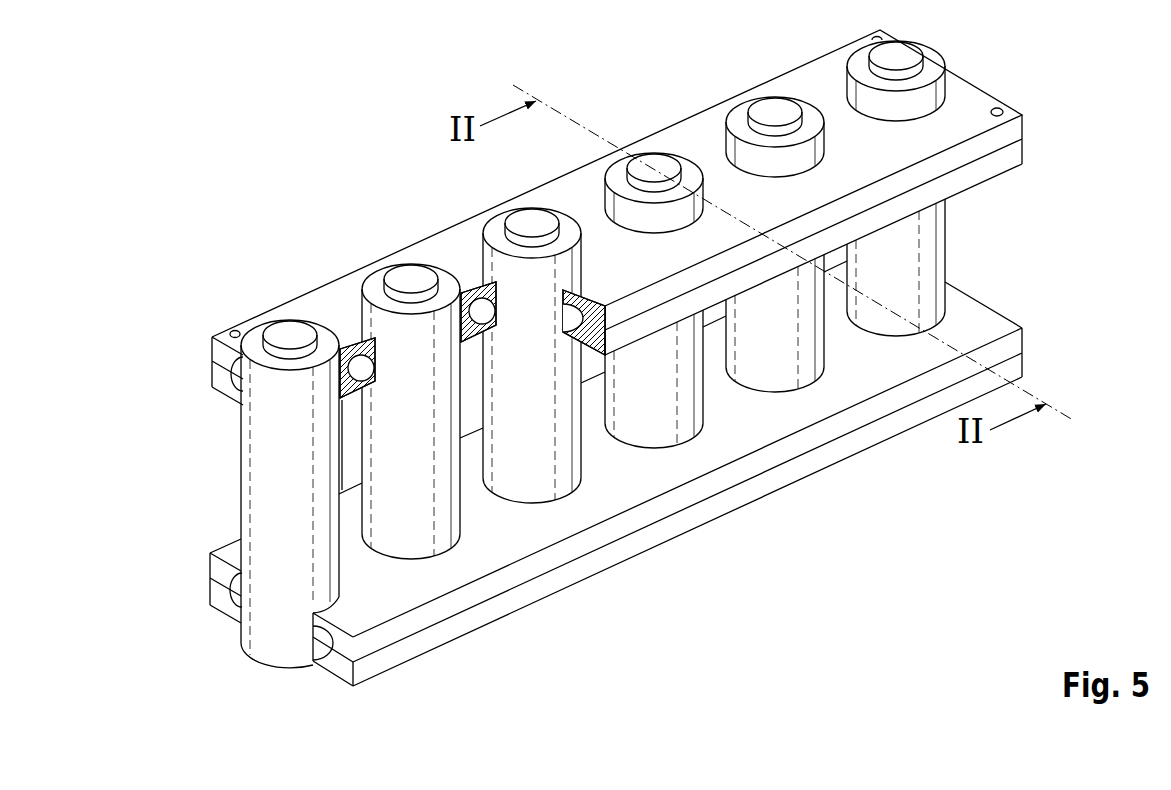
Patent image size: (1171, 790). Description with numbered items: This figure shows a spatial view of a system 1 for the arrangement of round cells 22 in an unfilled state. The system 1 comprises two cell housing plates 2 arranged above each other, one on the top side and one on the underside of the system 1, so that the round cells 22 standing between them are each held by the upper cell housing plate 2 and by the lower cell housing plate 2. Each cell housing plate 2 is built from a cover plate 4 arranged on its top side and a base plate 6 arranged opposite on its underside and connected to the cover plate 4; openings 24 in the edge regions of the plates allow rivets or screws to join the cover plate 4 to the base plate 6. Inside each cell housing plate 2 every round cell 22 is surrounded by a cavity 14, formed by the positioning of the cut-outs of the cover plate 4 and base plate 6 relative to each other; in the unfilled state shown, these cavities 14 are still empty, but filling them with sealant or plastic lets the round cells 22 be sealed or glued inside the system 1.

The system 1 is at (610, 364).
The cell housing plate 2 is at (620, 364).
The cover plate 4 is at (677, 134).
The base plate 6 is at (988, 180).
The cavity 14 is at (312, 646).
The round cell 22 is at (260, 500).
The opening 24 is at (1000, 108).